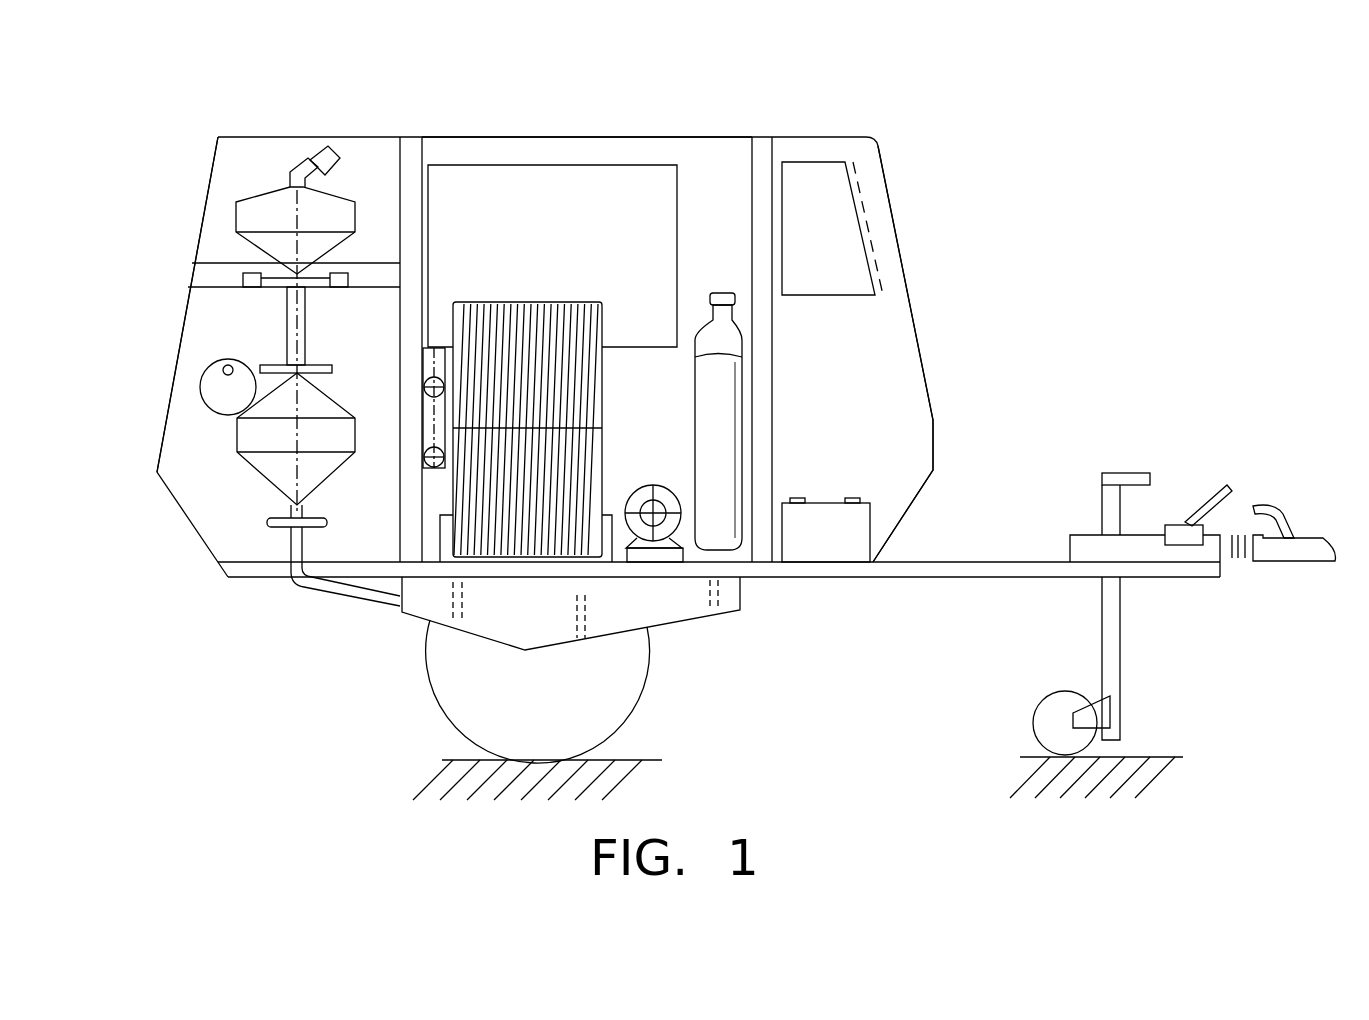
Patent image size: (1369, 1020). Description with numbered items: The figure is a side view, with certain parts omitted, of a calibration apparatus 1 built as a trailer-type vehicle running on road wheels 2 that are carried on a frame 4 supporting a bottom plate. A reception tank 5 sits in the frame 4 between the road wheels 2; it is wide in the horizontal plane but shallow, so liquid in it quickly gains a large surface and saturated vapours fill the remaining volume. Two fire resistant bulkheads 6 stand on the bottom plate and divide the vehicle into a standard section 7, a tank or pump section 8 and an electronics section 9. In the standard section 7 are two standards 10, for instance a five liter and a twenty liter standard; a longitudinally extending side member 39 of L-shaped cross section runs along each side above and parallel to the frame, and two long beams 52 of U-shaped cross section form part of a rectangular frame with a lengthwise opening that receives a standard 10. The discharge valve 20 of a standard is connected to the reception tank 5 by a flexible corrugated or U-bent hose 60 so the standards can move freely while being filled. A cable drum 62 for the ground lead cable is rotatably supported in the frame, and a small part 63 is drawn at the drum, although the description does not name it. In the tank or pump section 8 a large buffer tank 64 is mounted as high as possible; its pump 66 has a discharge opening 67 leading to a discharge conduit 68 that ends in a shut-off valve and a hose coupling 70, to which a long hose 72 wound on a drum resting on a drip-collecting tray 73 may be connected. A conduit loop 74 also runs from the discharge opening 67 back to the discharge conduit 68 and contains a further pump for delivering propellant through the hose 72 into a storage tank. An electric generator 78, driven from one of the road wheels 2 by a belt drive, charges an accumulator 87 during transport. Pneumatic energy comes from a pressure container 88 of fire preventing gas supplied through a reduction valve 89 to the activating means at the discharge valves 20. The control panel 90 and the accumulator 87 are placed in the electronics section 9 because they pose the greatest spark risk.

The calibration apparatus 1 is at (968, 158).
The road wheels 2 is at (470, 710).
The frame 4 is at (860, 568).
The reception tank 5 is at (742, 608).
The fire resistant bulkheads 6 is at (408, 147).
The standard section 7 is at (243, 162).
The tank or pump section 8 is at (712, 162).
The electronics section 9 is at (875, 190).
The standards 10 is at (245, 215).
The discharge valve 20 is at (427, 352).
The side member 39 is at (213, 270).
The long beams 52 is at (183, 287).
The hose 60 is at (338, 596).
The cable drum 62 is at (220, 400).
The motor shaft 63 is at (224, 366).
The buffer tank 64 is at (549, 242).
The pump 66 is at (393, 648).
The discharge opening 67 is at (427, 363).
The discharge conduit 68 is at (291, 468).
The hose coupling 70 is at (425, 462).
The hose 72 is at (565, 553).
The tray 73 is at (620, 565).
The conduit loop 74 is at (396, 506).
The electric generator 78 is at (665, 520).
The accumulator 87 is at (812, 515).
The pressure container 88 is at (733, 405).
The reduction valve 89 is at (735, 300).
The control panel 90 is at (832, 175).